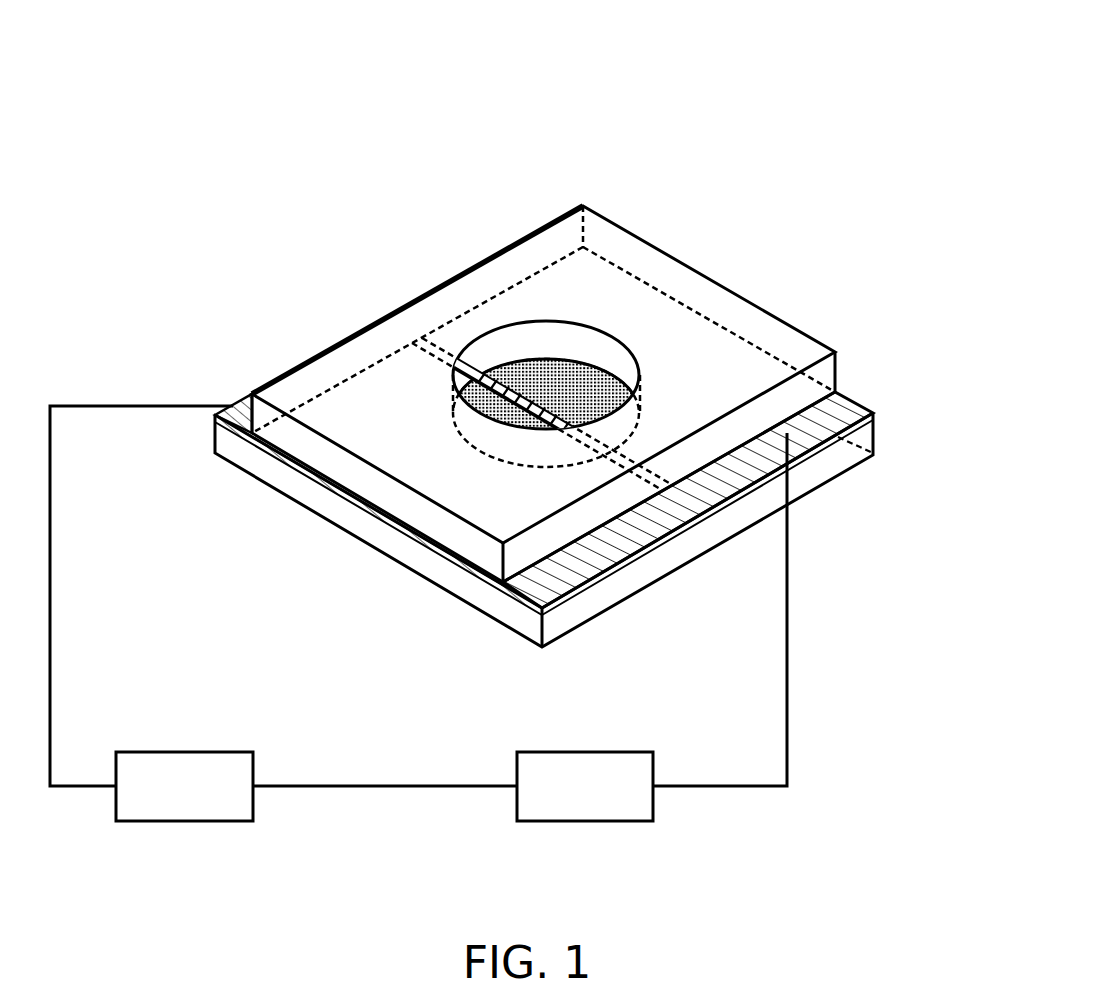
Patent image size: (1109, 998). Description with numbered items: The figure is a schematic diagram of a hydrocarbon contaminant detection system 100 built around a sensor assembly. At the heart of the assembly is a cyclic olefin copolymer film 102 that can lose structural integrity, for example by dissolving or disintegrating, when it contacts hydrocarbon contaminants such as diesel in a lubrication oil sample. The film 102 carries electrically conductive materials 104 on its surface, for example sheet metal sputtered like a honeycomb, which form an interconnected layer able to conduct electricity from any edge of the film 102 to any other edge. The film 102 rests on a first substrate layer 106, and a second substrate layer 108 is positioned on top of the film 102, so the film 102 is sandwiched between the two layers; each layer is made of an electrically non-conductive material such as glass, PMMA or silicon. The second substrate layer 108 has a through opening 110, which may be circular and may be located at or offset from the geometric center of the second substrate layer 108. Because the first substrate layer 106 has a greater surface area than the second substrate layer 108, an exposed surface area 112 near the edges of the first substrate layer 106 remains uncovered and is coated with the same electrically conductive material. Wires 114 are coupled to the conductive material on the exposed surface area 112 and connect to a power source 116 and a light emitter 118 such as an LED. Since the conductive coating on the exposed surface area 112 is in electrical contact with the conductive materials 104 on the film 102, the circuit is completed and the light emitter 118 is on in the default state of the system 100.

The hydrocarbon contaminant detection system 100 is at (855, 88).
The cyclic olefin copolymer (COC) film 102 is at (563, 380).
The electrically conductive materials 104 is at (460, 372).
The first substrate layer 106 is at (813, 473).
The second substrate layer 108 is at (665, 268).
The through opening 110 is at (495, 325).
The exposed surface area 112 is at (583, 565).
The wires 114 is at (788, 720).
The power source 116 is at (184, 786).
The light emitter 118 is at (585, 786).